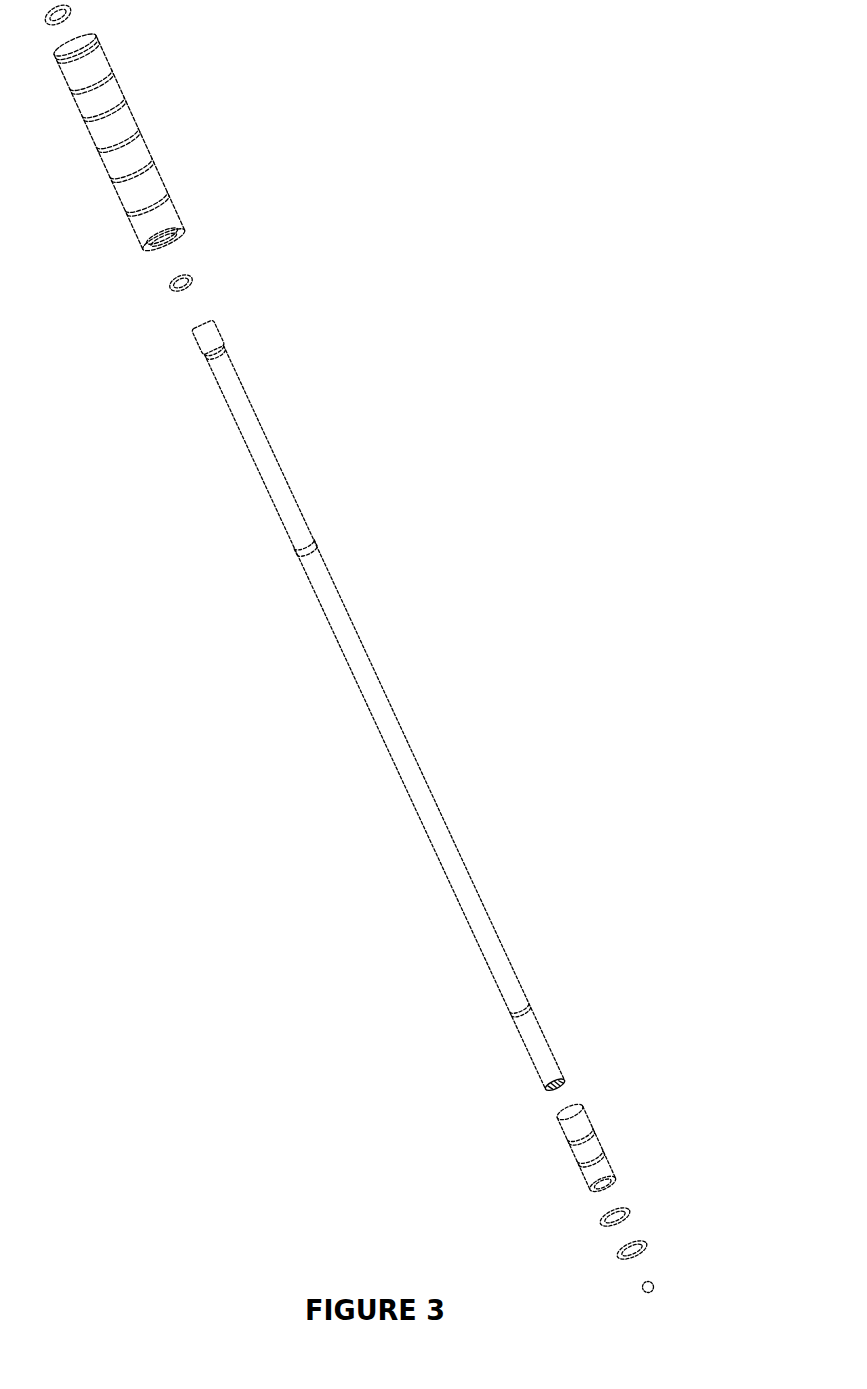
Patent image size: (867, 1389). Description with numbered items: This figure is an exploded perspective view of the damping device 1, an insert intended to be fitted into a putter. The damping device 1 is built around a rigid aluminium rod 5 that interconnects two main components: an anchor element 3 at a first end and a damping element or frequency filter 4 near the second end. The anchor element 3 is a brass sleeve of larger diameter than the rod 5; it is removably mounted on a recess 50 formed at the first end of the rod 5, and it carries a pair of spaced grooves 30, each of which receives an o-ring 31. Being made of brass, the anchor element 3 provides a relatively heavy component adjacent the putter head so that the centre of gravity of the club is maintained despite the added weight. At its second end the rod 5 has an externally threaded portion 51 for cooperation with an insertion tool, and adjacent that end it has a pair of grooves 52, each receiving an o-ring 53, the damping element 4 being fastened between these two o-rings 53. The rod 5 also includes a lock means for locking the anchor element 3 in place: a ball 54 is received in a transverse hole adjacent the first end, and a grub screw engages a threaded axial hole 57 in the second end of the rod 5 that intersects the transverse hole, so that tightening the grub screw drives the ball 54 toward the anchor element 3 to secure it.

The damping device 1 is at (509, 378).
The anchor element 3 is at (547, 1117).
The damping element 4 is at (128, 197).
The rigid aluminium rod 5 is at (318, 795).
The grooves 30 is at (602, 1150).
The o-ring 31 is at (645, 1242).
The recess 50 is at (537, 1038).
The externally threaded portion 51 is at (207, 333).
The grooves 52 is at (222, 348).
The o-ring 53 is at (72, 8).
The ball 54 is at (650, 1283).
The threaded axial hole 57 is at (553, 1087).